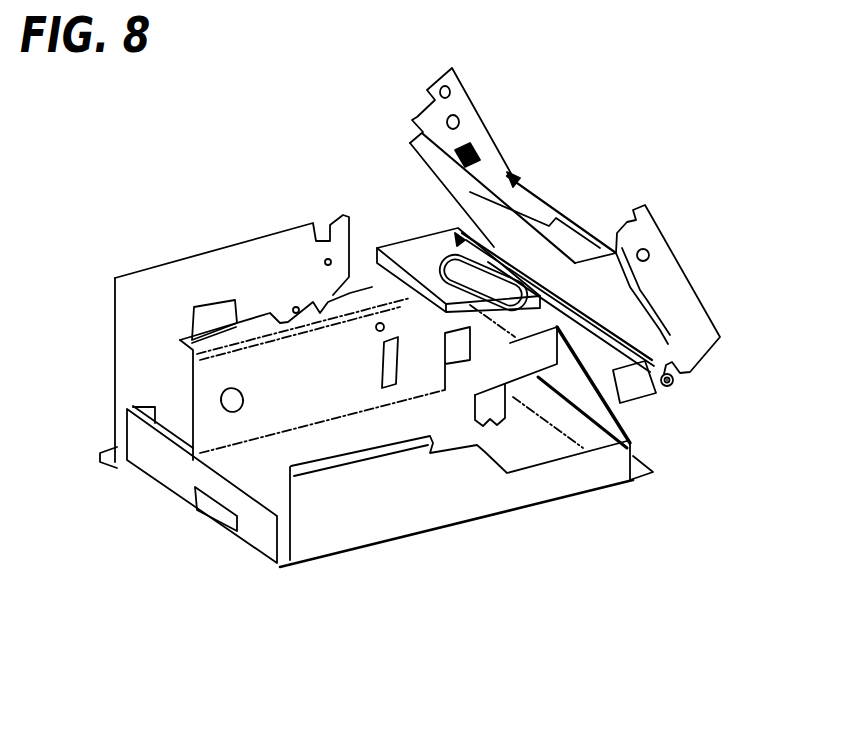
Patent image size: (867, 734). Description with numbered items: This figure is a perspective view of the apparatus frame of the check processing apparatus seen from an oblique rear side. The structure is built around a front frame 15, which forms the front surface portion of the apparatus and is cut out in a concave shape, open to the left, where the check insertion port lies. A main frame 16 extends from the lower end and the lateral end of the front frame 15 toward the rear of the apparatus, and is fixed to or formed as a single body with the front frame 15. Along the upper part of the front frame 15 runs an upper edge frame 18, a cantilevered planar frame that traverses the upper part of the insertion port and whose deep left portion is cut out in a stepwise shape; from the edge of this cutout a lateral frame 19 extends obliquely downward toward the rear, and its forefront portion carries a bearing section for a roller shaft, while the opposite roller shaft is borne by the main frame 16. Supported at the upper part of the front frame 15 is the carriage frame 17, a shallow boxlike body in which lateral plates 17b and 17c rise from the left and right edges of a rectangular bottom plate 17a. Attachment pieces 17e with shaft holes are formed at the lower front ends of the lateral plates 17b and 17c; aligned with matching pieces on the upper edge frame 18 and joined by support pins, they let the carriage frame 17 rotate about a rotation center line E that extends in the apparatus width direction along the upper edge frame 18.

The front frame 15 is at (645, 412).
The main frame 16 is at (388, 556).
The carriage frame 17 is at (582, 249).
The bottom plate 17a is at (627, 317).
The lateral plate 17b is at (677, 285).
The lateral plate 17c is at (490, 153).
The attachment pieces 17e is at (462, 236).
The upper edge frame 18 is at (418, 240).
The lateral frame 19 is at (500, 402).
The rotation center line E is at (688, 395).